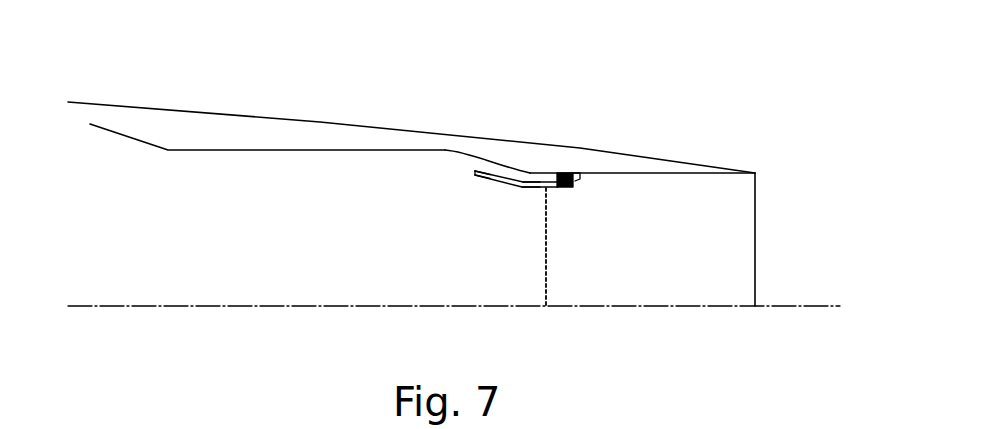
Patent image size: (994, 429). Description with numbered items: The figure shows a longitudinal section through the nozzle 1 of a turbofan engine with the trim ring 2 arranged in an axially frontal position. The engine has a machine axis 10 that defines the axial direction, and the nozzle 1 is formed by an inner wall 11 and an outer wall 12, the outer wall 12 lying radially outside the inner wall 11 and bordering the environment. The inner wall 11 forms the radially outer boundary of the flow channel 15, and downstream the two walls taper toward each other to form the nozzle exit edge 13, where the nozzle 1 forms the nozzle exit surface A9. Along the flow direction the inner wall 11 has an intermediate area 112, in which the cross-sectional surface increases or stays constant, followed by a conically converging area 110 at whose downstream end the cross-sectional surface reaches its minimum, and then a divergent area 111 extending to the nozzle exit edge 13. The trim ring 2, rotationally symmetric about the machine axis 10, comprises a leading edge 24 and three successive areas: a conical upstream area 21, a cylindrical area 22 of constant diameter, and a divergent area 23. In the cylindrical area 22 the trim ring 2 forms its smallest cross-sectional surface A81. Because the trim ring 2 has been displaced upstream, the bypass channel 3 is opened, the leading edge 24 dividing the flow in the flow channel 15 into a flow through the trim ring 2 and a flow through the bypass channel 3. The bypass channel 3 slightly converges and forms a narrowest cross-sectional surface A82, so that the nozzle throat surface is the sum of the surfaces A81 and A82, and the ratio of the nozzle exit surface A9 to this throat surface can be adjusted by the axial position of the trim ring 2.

The nozzle 1 is at (675, 100).
The machine axis 10 is at (812, 307).
The inner wall 11 is at (362, 152).
The conically converging area 110 is at (488, 163).
The divergent area 111 is at (584, 173).
The intermediate area 112 is at (232, 150).
The outer wall 12 is at (423, 131).
The nozzle exit edge 13 is at (755, 178).
The flow channel 15 is at (308, 250).
The trim ring 2 is at (507, 187).
The upstream area 21 is at (474, 178).
The cylindrical area 22 is at (532, 190).
The divergent area 23 is at (569, 190).
The leading edge 24 is at (475, 172).
The bypass channel 3 is at (530, 173).
The smallest cross-sectional surface A81 is at (550, 257).
The narrowest cross-sectional surface of the bypass channel A82 is at (573, 183).
The nozzle exit surface A9 is at (757, 240).